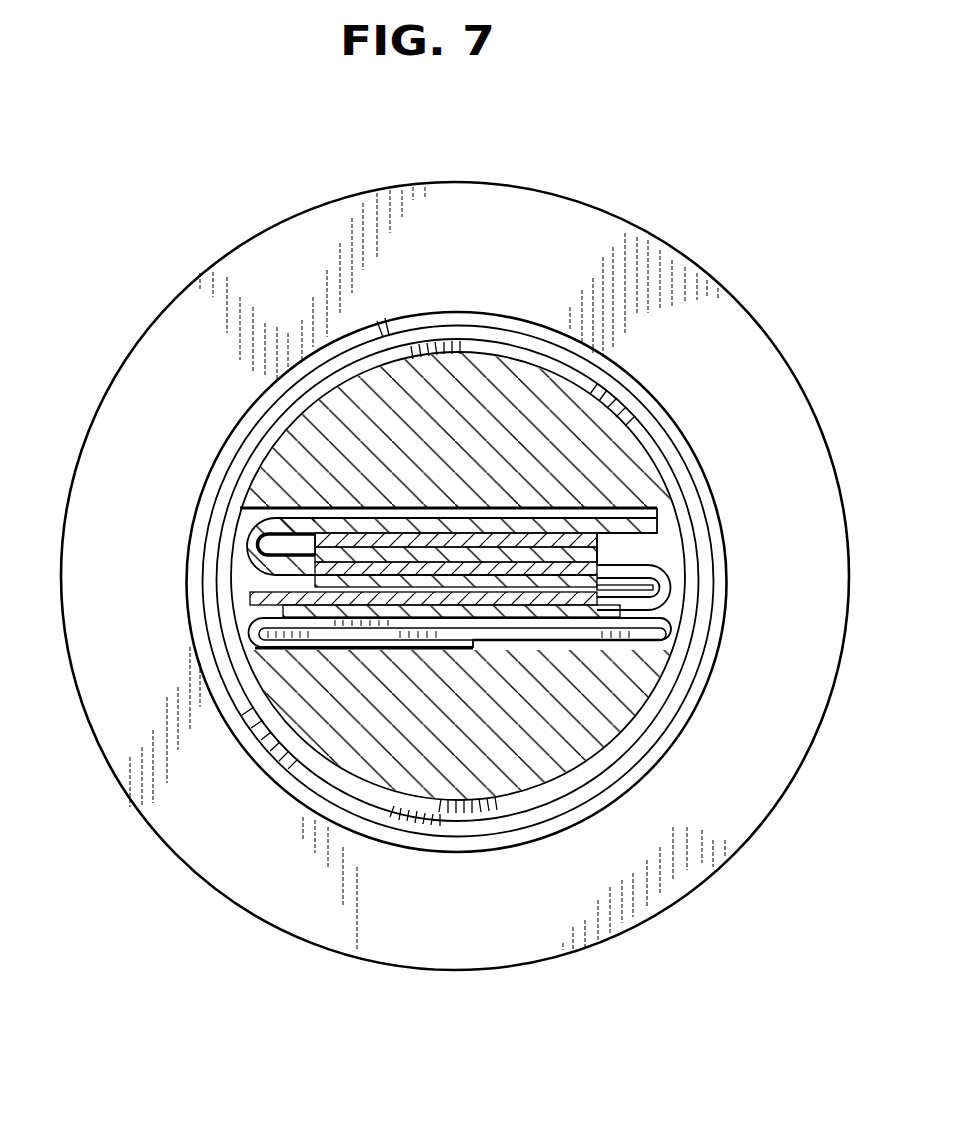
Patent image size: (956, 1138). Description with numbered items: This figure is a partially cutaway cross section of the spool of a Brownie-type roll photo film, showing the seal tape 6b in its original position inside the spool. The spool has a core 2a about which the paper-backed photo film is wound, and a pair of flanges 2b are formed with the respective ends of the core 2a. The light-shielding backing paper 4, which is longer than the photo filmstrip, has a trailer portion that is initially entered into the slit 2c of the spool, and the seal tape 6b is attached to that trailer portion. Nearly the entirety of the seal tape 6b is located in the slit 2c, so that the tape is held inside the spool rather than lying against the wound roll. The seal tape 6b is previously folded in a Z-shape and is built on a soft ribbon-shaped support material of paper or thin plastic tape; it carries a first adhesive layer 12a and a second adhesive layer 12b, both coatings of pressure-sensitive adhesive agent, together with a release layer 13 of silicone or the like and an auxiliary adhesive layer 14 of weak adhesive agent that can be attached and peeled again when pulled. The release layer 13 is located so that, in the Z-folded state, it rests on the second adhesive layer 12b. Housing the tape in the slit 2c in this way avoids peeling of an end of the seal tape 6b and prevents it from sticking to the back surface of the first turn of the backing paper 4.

The core 2a is at (496, 378).
The flanges 2b is at (456, 205).
The slit 2c is at (240, 580).
The light-shielding backing paper 4 is at (575, 627).
The seal tape 6b is at (675, 546).
The first adhesive layer 12a is at (638, 640).
The second adhesive layer 12b is at (328, 527).
The release layer 13 is at (315, 552).
The auxiliary adhesive layer 14 is at (652, 588).